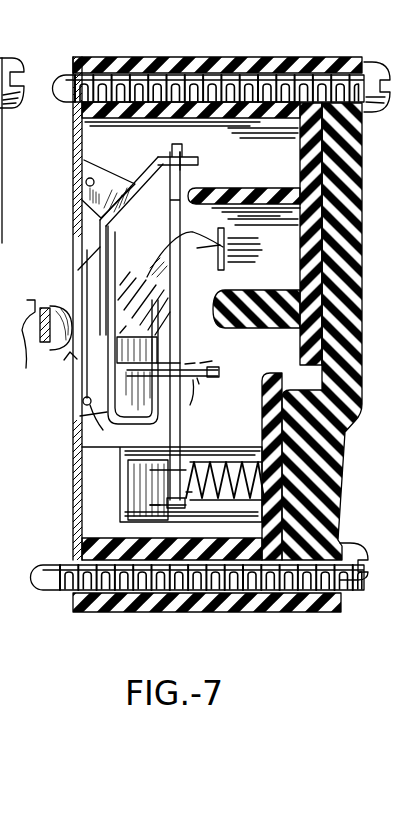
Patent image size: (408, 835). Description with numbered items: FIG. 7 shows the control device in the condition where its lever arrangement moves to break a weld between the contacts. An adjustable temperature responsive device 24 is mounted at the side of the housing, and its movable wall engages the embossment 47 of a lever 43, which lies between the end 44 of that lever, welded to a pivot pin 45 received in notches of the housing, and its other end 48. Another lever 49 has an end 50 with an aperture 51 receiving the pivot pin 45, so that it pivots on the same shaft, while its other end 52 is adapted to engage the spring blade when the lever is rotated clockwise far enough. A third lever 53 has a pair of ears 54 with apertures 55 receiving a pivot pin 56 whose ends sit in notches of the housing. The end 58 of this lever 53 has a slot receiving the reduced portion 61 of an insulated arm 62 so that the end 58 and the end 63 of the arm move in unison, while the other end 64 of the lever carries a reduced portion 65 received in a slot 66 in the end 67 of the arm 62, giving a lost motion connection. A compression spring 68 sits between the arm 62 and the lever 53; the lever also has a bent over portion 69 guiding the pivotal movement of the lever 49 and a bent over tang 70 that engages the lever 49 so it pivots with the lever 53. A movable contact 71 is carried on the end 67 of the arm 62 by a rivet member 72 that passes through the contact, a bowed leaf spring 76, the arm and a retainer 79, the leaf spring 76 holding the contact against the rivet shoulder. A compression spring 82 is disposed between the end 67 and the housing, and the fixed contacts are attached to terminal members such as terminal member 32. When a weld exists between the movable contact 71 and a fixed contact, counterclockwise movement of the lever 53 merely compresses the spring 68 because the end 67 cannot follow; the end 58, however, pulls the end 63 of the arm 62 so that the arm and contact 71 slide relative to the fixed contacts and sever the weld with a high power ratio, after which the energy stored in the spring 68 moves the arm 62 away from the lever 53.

The adjustable temperature responsive device 24 is at (26, 368).
The terminal member 32 is at (135, 452).
The lever 43 is at (68, 356).
The end 44 is at (83, 400).
The pivot pin 45 is at (82, 416).
The embossment 47 is at (57, 306).
The end 48 is at (90, 250).
The lever 49 is at (153, 363).
The end 50 is at (78, 441).
The aperture 51 is at (103, 424).
The end 52 is at (225, 250).
The lever 53 is at (106, 233).
The ears 54 is at (103, 166).
The apertures 55 is at (130, 178).
The pivot pin 56 is at (85, 183).
The end 58 is at (198, 160).
The reduced portion 61 is at (181, 170).
The insulated arm 62 is at (183, 288).
The end 63 is at (206, 192).
The end 64 is at (190, 405).
The reduced portion 65 is at (197, 378).
The slot 66 is at (221, 372).
The end 67 is at (175, 508).
The compression spring 68 is at (181, 320).
The bent over portion 69 is at (132, 348).
The bent over tang 70 is at (132, 268).
The movable contact 71 is at (130, 492).
The rivet member 72 is at (140, 500).
The bowed leaf spring 76 is at (152, 505).
The retainer 79 is at (190, 495).
The compression spring 82 is at (250, 472).